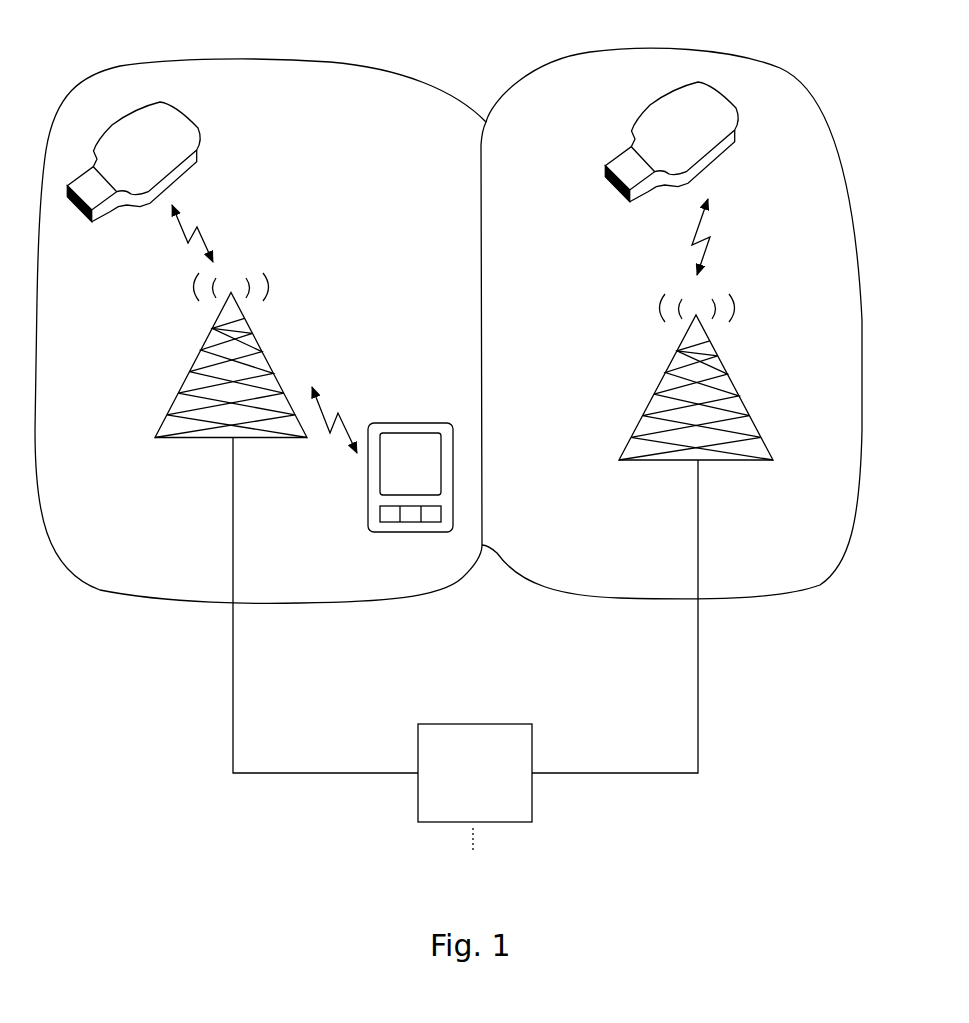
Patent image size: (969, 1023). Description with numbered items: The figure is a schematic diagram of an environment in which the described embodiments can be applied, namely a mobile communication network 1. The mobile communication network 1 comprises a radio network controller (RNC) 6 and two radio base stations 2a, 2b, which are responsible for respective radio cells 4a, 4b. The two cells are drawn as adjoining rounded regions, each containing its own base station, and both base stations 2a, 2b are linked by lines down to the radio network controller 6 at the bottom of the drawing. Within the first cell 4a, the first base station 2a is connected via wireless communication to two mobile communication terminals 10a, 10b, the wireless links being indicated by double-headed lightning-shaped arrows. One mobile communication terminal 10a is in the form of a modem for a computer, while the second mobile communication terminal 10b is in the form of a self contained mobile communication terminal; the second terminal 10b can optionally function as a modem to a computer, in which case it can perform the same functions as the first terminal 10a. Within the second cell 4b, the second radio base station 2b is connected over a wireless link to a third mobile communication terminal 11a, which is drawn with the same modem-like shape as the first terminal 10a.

The mobile communication network 1 is at (190, 721).
The first radio base station 2a is at (263, 352).
The second radio base station 2b is at (727, 375).
The radio cell 4a is at (292, 62).
The radio cell 4b is at (772, 63).
The radio network controller 6 is at (466, 758).
The first mobile communication terminal 10a is at (168, 158).
The second mobile communication terminal 10b is at (435, 474).
The third mobile communication terminal 11a is at (658, 145).